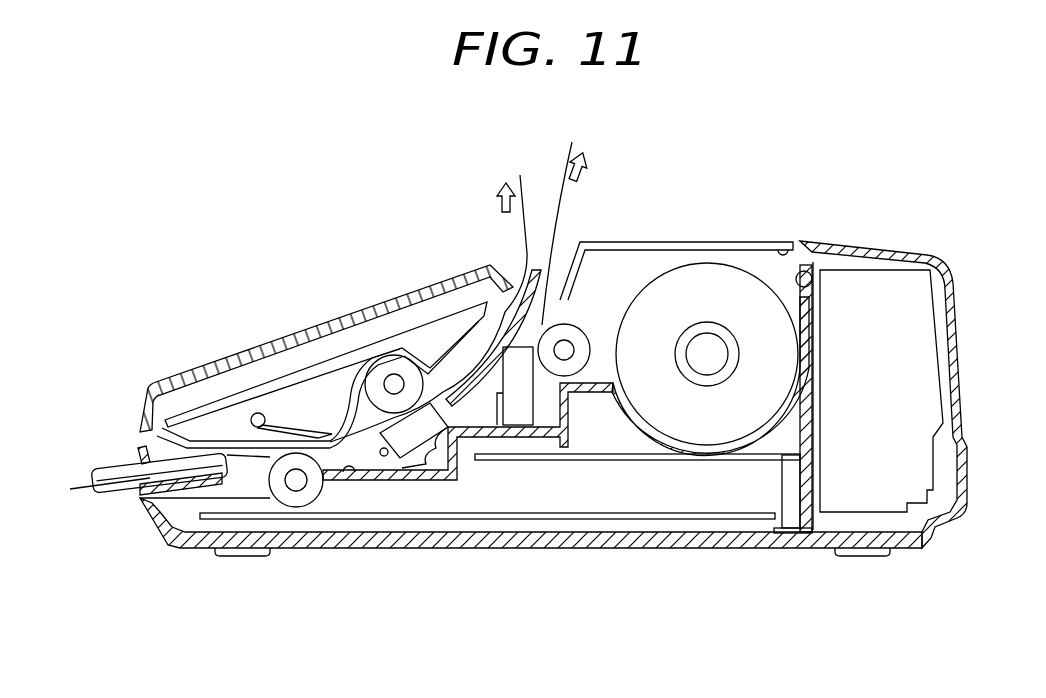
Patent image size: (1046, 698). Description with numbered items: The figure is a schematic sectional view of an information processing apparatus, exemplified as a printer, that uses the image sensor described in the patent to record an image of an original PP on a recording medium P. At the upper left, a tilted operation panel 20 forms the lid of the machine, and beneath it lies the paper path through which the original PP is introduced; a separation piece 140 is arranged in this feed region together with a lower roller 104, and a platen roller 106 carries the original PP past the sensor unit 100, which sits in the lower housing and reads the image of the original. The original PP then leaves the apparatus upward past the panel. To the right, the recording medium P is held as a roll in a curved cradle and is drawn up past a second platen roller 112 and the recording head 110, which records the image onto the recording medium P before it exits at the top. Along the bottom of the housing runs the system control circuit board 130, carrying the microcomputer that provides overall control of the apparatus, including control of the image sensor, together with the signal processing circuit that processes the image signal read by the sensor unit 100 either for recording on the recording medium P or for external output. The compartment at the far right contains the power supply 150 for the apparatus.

The operation panel 20 is at (268, 347).
The separation piece 140 is at (270, 425).
The platen roller 106 is at (382, 367).
The pickup roller 104 is at (303, 487).
The sensor unit 100 is at (375, 463).
The recording head 110 is at (527, 420).
The platen roller 112 is at (573, 337).
The system control circuit board 130 is at (688, 515).
The power supply 150 is at (868, 282).
The recording medium P is at (727, 270).
The original PP is at (527, 225).